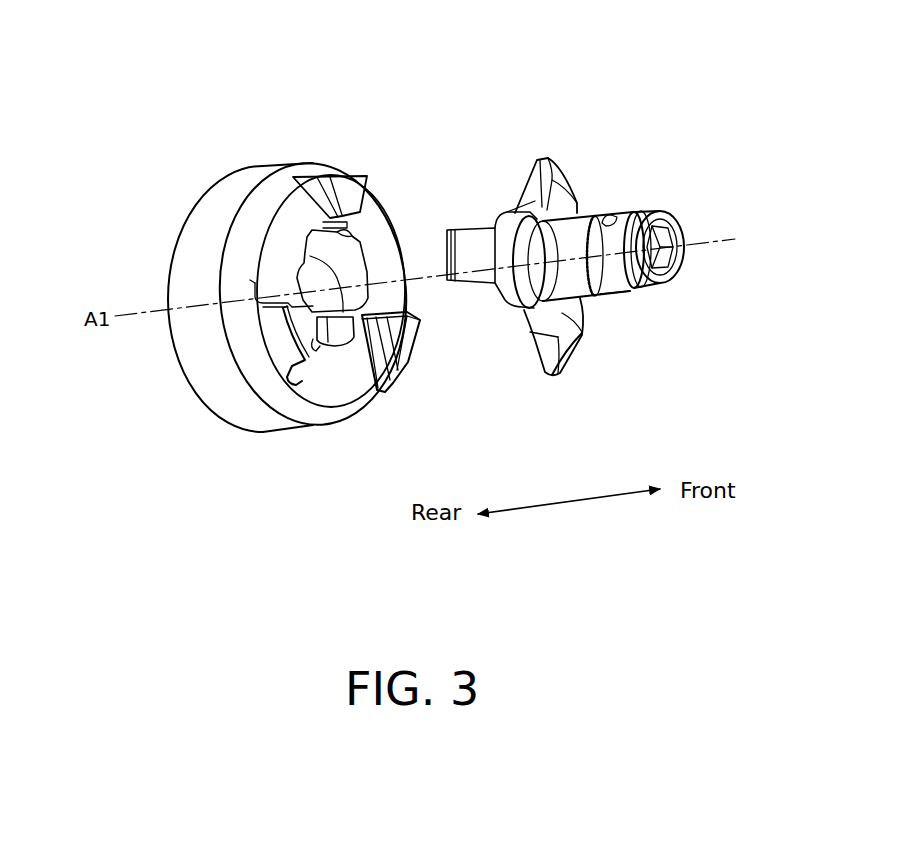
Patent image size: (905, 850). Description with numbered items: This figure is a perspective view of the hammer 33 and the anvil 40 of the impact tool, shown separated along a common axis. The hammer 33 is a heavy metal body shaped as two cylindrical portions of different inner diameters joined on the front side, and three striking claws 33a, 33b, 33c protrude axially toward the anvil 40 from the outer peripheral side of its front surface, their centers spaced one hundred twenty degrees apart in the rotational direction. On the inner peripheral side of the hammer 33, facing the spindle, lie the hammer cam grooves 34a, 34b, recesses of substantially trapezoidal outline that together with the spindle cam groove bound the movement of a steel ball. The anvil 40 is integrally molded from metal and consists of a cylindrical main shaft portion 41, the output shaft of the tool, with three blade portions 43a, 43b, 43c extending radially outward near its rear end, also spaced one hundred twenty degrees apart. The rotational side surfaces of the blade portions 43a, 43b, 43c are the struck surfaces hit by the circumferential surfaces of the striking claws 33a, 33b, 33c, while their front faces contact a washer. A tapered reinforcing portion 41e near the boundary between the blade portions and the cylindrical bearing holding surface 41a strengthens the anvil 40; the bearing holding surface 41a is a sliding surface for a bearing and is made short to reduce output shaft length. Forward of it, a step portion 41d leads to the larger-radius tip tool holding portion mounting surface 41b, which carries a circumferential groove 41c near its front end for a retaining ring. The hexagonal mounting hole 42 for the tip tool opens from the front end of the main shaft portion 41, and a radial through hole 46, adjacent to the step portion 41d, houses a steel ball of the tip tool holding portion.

The hammer 33 is at (160, 112).
The striking claw 33a is at (345, 176).
The striking claw 33b is at (410, 343).
The striking claw 33c is at (302, 327).
The hammer cam groove 34a is at (341, 251).
The hammer cam groove 34b is at (338, 340).
The anvil 40 is at (703, 163).
The main shaft portion 41 is at (586, 214).
The bearing holding surface 41a is at (593, 256).
The tip tool holding portion mounting surface 41b is at (634, 285).
The circumferential groove 41c is at (652, 281).
The step portion 41d is at (622, 302).
The reinforcing portion 41e is at (527, 298).
The mounting hole 42 is at (662, 245).
The blade portion 43a is at (540, 157).
The blade portion 43b is at (567, 360).
The blade portion 43c is at (475, 243).
The through hole 46 is at (615, 213).